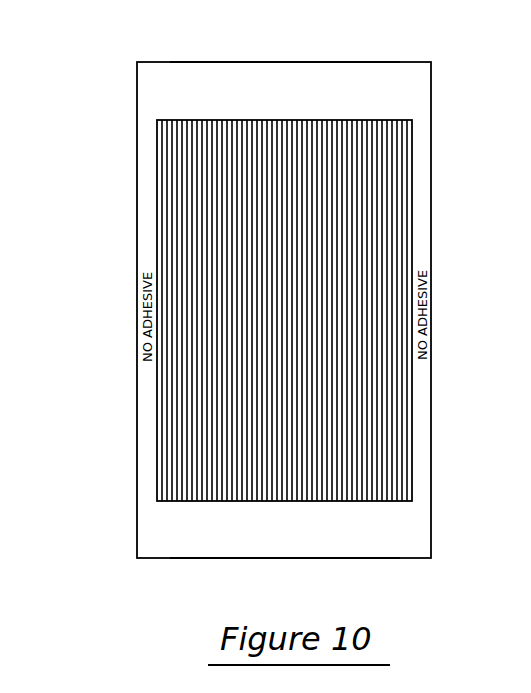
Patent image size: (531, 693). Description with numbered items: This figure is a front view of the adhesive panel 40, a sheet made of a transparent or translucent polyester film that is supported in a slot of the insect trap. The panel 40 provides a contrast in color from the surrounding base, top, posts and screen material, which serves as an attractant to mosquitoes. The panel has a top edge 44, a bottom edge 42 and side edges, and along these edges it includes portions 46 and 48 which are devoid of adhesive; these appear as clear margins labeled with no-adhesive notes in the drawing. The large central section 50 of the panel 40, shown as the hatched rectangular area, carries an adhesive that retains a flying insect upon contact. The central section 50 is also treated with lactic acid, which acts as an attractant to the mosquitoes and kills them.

The adhesive panel 40 is at (125, 376).
The bottom edge 42 is at (297, 558).
The top edge 44 is at (289, 62).
The portion devoid of adhesive 46 is at (255, 528).
The portion devoid of adhesive 48 is at (254, 96).
The central section 50 is at (388, 200).